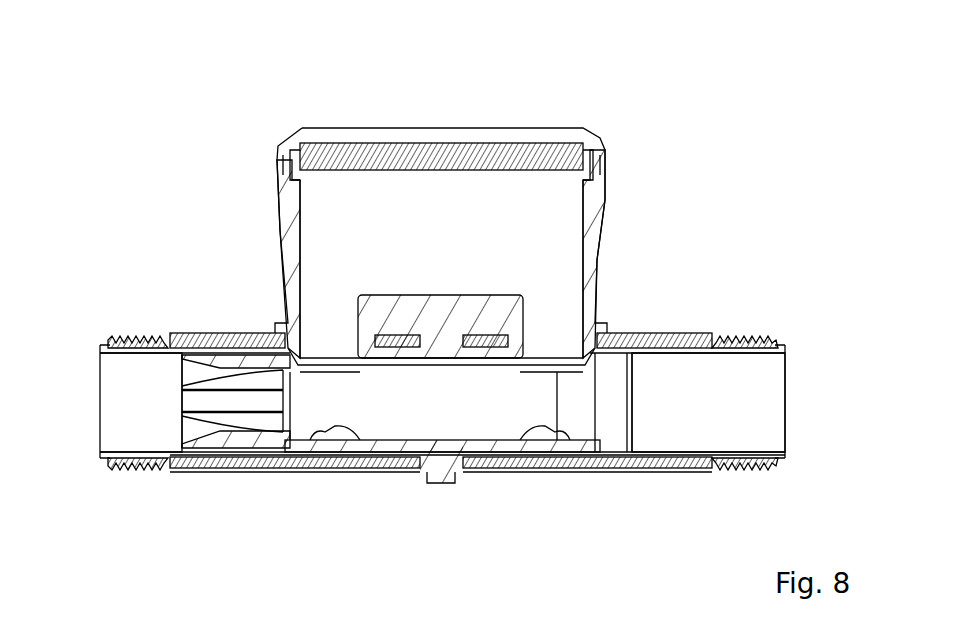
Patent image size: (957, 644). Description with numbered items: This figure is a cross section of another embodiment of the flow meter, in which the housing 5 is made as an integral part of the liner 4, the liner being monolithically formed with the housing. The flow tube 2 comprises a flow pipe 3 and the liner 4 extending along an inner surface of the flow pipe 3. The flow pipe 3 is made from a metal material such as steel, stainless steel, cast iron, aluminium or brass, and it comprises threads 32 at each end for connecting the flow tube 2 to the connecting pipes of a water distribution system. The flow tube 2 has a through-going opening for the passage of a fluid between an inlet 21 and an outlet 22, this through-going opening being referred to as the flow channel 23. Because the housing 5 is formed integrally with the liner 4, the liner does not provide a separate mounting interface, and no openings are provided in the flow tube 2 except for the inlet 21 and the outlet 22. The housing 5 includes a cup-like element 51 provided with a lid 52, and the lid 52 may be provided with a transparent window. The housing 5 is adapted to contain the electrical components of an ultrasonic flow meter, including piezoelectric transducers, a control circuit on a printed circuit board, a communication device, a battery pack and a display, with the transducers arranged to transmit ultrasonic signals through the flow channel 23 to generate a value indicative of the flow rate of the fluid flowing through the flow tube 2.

The flow tube 2 is at (454, 391).
The flow pipe 3 is at (193, 337).
The liner 4 is at (292, 338).
The housing 5 is at (484, 203).
The inlet 21 is at (90, 398).
The outlet 22 is at (800, 410).
The flow channel 23 is at (697, 400).
The threads 32 is at (122, 340).
The cup-like element 51 is at (583, 250).
The lid 52 is at (487, 157).